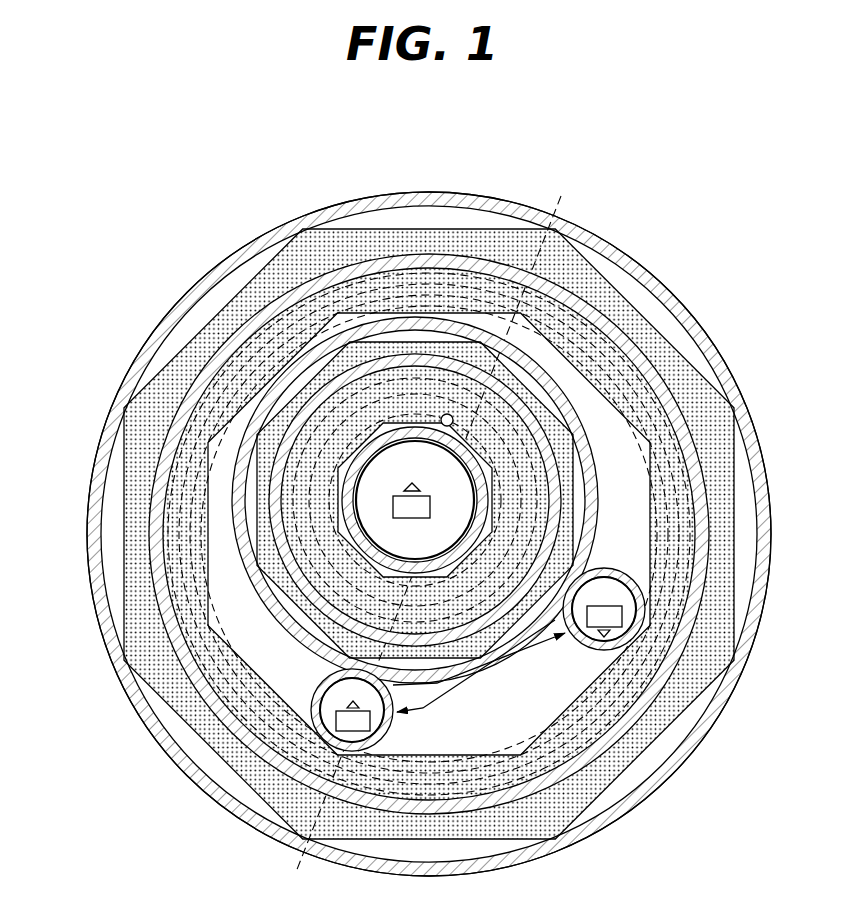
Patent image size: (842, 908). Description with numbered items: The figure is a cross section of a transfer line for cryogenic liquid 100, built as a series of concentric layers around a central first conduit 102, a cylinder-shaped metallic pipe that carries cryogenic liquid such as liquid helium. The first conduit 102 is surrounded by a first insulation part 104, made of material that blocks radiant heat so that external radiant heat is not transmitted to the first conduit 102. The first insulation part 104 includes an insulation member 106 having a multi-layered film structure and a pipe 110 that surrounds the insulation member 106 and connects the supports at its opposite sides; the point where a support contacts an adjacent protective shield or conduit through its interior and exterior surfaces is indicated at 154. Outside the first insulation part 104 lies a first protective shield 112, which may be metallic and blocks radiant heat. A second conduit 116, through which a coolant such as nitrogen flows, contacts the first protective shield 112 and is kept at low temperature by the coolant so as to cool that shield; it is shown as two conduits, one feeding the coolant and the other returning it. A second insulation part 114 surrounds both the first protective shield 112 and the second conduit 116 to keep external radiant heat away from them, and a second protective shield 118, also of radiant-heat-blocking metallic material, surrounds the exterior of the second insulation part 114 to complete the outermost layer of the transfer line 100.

The transfer line for cryogenic liquid 100 is at (250, 187).
The first conduit 102 is at (357, 440).
The first insulation part 104 is at (245, 470).
The insulation member 106 is at (250, 567).
The pipe 110 is at (355, 363).
The first protective shield 112 is at (232, 517).
The second insulation part 114 is at (197, 327).
The second conduit 116 is at (322, 738).
The second protective shield 118 is at (513, 208).
The contact between support and adjacent protective shield or conduit 154 is at (453, 414).